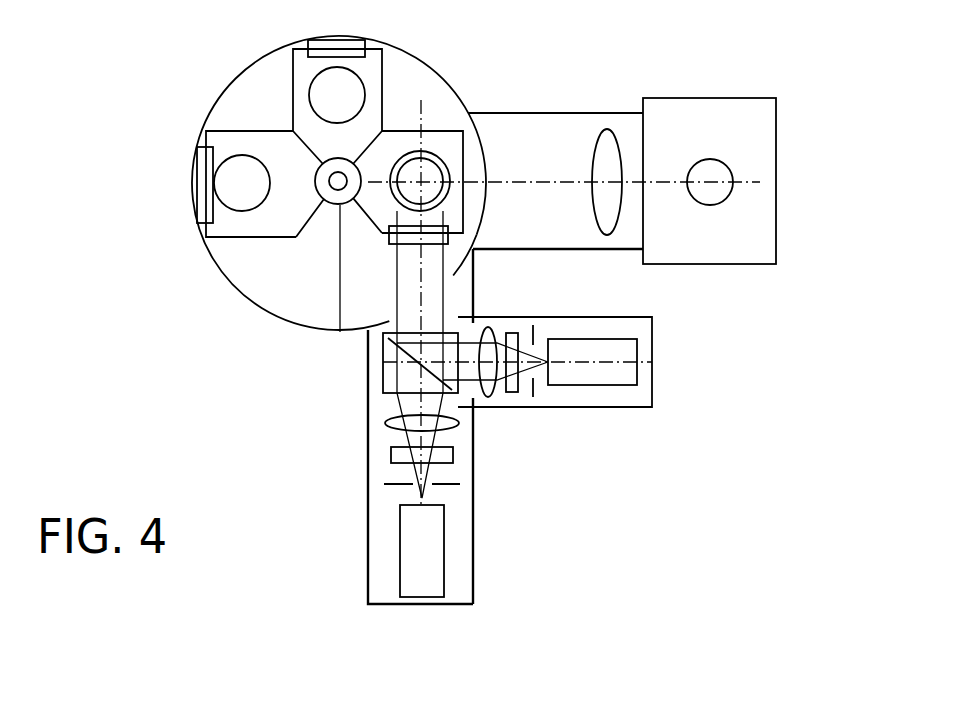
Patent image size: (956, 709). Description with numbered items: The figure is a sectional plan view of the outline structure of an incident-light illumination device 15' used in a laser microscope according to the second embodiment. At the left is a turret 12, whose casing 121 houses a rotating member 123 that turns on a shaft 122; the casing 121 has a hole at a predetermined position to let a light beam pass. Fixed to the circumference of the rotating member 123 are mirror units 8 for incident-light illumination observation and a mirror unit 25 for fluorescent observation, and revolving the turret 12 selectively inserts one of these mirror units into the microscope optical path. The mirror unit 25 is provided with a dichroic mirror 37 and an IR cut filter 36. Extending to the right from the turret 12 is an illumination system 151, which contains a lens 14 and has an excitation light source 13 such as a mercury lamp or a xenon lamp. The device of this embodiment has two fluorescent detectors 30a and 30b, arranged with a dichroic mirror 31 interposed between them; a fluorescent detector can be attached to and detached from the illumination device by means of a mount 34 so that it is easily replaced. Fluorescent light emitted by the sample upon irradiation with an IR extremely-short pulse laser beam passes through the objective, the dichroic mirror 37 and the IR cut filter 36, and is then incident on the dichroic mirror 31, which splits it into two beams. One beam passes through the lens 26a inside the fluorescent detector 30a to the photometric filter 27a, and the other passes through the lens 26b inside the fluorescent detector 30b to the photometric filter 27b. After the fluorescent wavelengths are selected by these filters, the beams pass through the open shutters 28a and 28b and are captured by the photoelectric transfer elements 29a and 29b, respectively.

The mirror unit 8 is at (290, 67).
The turret 12 is at (212, 105).
The casing 121 is at (255, 307).
The shaft 122 is at (335, 207).
The rotating member 123 is at (328, 210).
The mirror unit 25 is at (402, 150).
The dichroic mirror 37 is at (428, 168).
The IR cut filter 36 is at (448, 245).
The incident-light illumination device 15' is at (555, 182).
The illumination system 151 is at (565, 180).
The lens 14 is at (612, 230).
The excitation light source 13 is at (716, 199).
The mount 34 is at (463, 305).
The dichroic mirror 31 is at (440, 360).
The lens 26a is at (387, 422).
The photometric filter 27a is at (390, 458).
The shutter 28a is at (403, 485).
The photoelectric transfer element 29a is at (425, 590).
The fluorescent detector 30a is at (368, 573).
The lens 26b is at (492, 400).
The photometric filter 27b is at (512, 393).
The shutter 28b is at (535, 390).
The photoelectric transfer element 29b is at (637, 372).
The fluorescent detector 30b is at (623, 415).